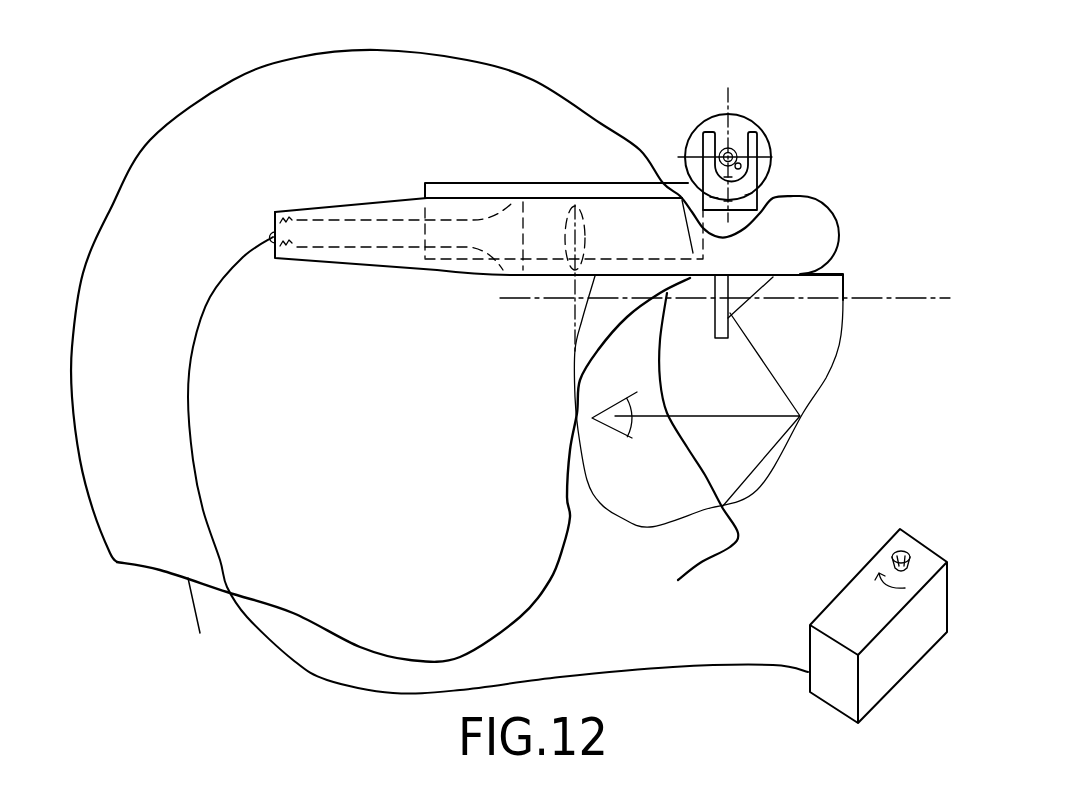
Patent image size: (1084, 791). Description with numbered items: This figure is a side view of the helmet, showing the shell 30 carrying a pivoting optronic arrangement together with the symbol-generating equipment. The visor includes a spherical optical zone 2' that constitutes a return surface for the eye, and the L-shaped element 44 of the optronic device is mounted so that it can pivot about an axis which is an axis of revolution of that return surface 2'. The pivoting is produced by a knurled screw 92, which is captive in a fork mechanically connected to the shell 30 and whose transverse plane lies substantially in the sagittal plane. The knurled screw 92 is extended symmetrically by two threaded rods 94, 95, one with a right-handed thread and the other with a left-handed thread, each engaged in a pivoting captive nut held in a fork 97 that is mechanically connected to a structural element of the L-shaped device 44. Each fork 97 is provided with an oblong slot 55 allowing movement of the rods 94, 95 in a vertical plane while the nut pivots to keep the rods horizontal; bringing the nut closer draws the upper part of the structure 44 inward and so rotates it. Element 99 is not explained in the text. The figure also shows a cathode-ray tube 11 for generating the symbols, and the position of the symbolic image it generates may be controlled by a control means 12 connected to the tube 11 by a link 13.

The shell 30 is at (520, 98).
The link 13 is at (722, 662).
The cathode-ray tube 11 is at (396, 234).
The L-shaped element 44 is at (812, 223).
The knurled screw 92 is at (750, 122).
The threaded rod 94 is at (765, 147).
The threaded rod 95 is at (743, 165).
The fork 97 is at (745, 200).
The bracket arm 99 is at (718, 118).
The oblong slot 55 is at (737, 132).
The spherical optical zone 2' is at (738, 401).
The control means 12 is at (857, 597).